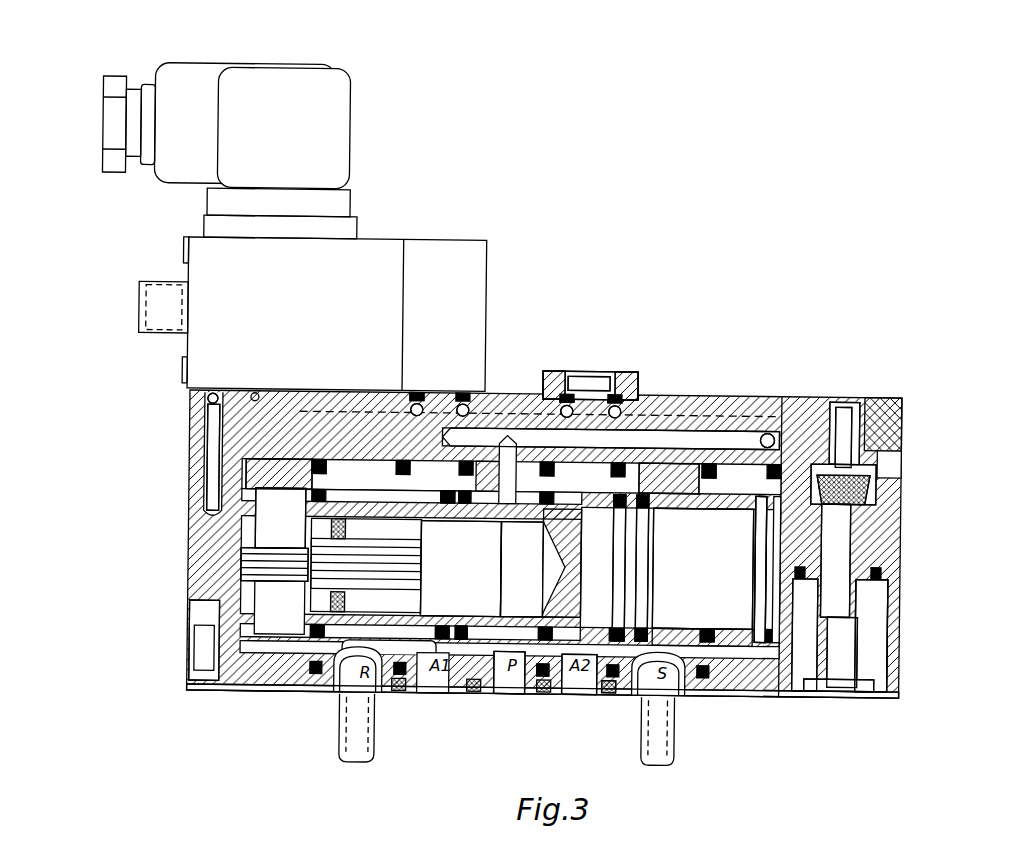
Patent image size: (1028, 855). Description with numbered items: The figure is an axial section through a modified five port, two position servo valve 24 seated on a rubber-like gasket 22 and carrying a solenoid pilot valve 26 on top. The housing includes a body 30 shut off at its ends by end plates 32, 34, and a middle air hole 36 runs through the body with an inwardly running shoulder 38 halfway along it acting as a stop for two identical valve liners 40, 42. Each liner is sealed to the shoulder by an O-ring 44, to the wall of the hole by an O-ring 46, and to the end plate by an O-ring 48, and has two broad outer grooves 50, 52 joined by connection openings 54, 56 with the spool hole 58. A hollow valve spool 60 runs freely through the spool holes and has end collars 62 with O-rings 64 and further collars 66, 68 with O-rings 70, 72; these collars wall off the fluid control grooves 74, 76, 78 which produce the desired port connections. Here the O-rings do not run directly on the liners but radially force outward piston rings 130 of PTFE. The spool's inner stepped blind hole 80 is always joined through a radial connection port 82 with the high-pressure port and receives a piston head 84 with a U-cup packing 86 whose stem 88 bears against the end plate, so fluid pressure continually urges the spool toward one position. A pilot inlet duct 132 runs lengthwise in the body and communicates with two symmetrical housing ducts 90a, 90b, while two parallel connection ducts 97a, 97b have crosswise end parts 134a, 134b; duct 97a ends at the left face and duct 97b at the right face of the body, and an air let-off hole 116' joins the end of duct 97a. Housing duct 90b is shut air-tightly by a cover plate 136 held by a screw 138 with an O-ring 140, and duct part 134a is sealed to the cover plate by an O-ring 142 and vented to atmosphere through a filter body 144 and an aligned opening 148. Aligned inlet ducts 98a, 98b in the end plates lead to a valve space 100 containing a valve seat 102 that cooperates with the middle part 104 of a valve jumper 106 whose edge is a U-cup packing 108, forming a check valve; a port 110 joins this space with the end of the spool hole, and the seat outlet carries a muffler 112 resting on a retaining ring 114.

The gasket 22 is at (330, 688).
The 5 port, 2 position valve 24 is at (810, 302).
The solenoid pilot valve 26 is at (388, 192).
The body 30 is at (778, 420).
The end plate 32 is at (197, 458).
The end plate 34 is at (893, 587).
The middle air hole 36 is at (690, 456).
The shoulder 38 is at (478, 396).
The valve liner 40 is at (368, 458).
The valve liner 42 is at (712, 458).
The O-ring 44 is at (520, 432).
The O-ring 46 is at (760, 428).
The O-ring 48 is at (810, 420).
The broad groove 50 is at (568, 688).
The broad groove 52 is at (655, 632).
The connection opening 54 is at (588, 653).
The connection opening 56 is at (673, 635).
The spool hole 58 is at (713, 494).
The valve spool 60 is at (527, 686).
The collar 62 is at (773, 527).
The O-ring 64 is at (757, 622).
The collar 66 is at (458, 518).
The collar 68 is at (635, 530).
The O-ring 70 is at (450, 500).
The O-ring 72 is at (468, 516).
The fluid control groove 74 is at (322, 688).
The fluid control groove 76 is at (490, 688).
The fluid control groove 78 is at (727, 627).
The stepped blind hole 80 is at (435, 518).
The radial connection port 82 is at (518, 518).
The piston head 84 is at (315, 460).
The U-cup packing 86 is at (242, 522).
The stem 88 is at (230, 555).
The housing duct 90a is at (453, 396).
The housing duct 90b is at (530, 418).
The connection duct 97a is at (255, 394).
The connection duct 97b is at (842, 435).
The inlet duct 98a is at (223, 417).
The inlet duct 98b is at (883, 467).
The valve space 100 is at (806, 525).
The valve seat 102 is at (840, 600).
The middle part 104 is at (857, 493).
The valve jumper 106 is at (857, 470).
The U-cup packing 108 is at (880, 478).
The port 110 is at (883, 540).
The muffler 112 is at (867, 650).
The retaining ring 114 is at (870, 682).
The air let-off hole 116' is at (136, 460).
The piston ring 130 is at (657, 505).
The pilot inlet duct 132 is at (677, 420).
The end part 134a is at (623, 370).
The end part 134b is at (408, 394).
The cover plate 136 is at (558, 396).
The screw 138 is at (588, 377).
The O-ring 140 is at (580, 405).
The O-ring 142 is at (637, 390).
The filter body 144 is at (618, 379).
The opening 148 is at (603, 405).